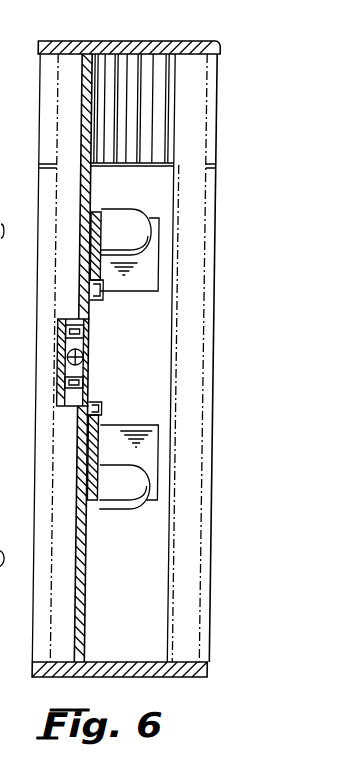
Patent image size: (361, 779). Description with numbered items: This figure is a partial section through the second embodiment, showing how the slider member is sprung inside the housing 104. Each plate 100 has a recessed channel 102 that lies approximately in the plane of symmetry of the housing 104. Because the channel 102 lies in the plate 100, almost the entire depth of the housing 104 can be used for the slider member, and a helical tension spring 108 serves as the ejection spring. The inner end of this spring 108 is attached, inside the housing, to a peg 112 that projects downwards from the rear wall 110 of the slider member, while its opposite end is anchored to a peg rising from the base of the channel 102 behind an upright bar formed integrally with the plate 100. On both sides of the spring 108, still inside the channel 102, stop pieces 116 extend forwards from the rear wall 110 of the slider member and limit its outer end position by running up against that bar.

The plate 100 is at (86, 558).
The recessed channel 102 is at (86, 347).
The housing 104 is at (105, 42).
The helical tension spring 108 is at (85, 374).
The rear wall of the slider member 110 is at (152, 271).
The peg 112 is at (85, 357).
The stop pieces 116 is at (72, 320).